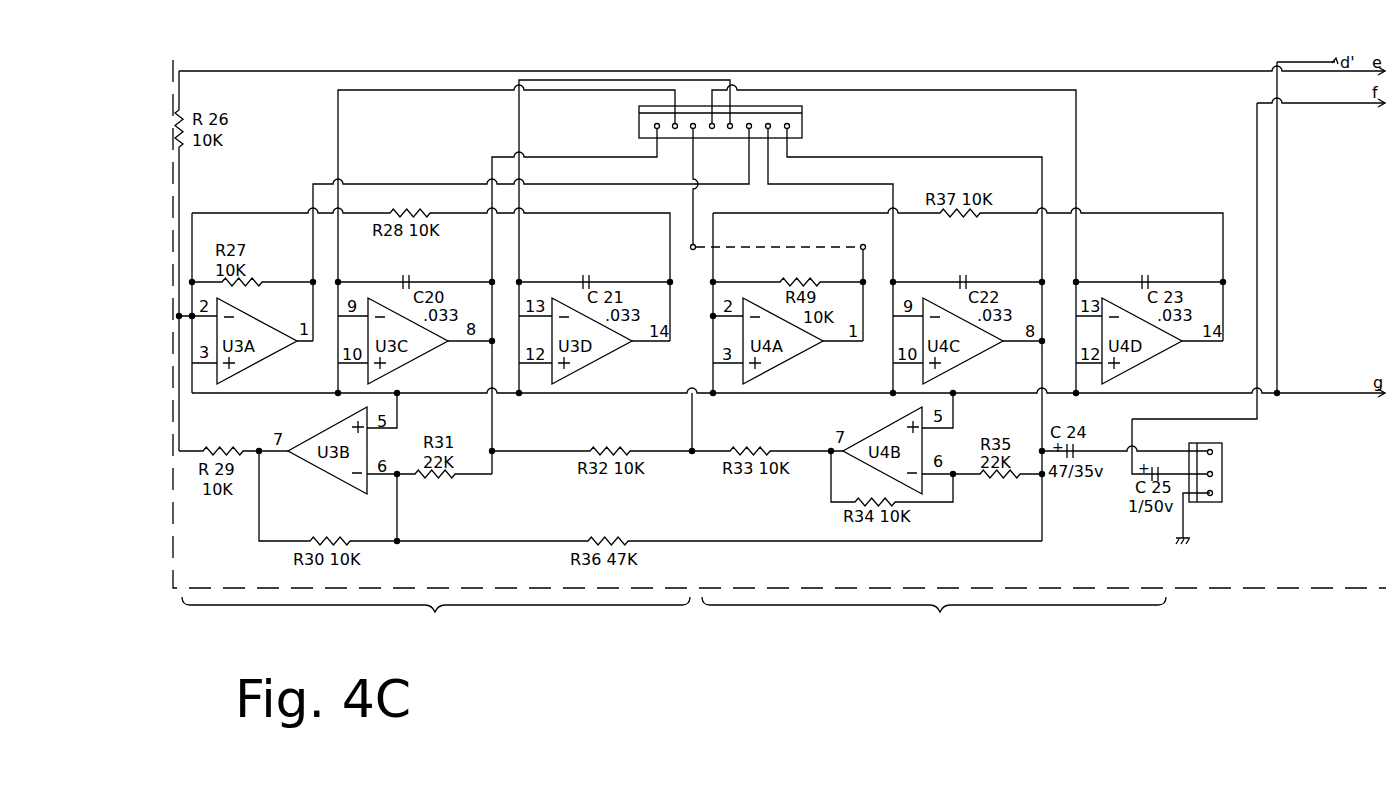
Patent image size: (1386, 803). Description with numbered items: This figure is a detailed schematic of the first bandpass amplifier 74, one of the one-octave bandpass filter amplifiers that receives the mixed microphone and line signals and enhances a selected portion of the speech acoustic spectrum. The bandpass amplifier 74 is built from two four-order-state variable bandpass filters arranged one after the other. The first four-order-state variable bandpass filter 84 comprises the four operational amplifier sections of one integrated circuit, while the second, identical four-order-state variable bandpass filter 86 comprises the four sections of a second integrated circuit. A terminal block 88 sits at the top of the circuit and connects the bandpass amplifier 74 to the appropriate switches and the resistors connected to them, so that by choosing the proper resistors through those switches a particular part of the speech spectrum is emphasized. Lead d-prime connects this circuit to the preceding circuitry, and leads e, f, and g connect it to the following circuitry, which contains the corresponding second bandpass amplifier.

The terminal block 88 is at (802, 122).
The first four-order-state variable bandpass filter 84 is at (436, 616).
The second four-order-state variable bandpass filter 86 is at (934, 616).
The bandpass amplifier 74 is at (796, 568).